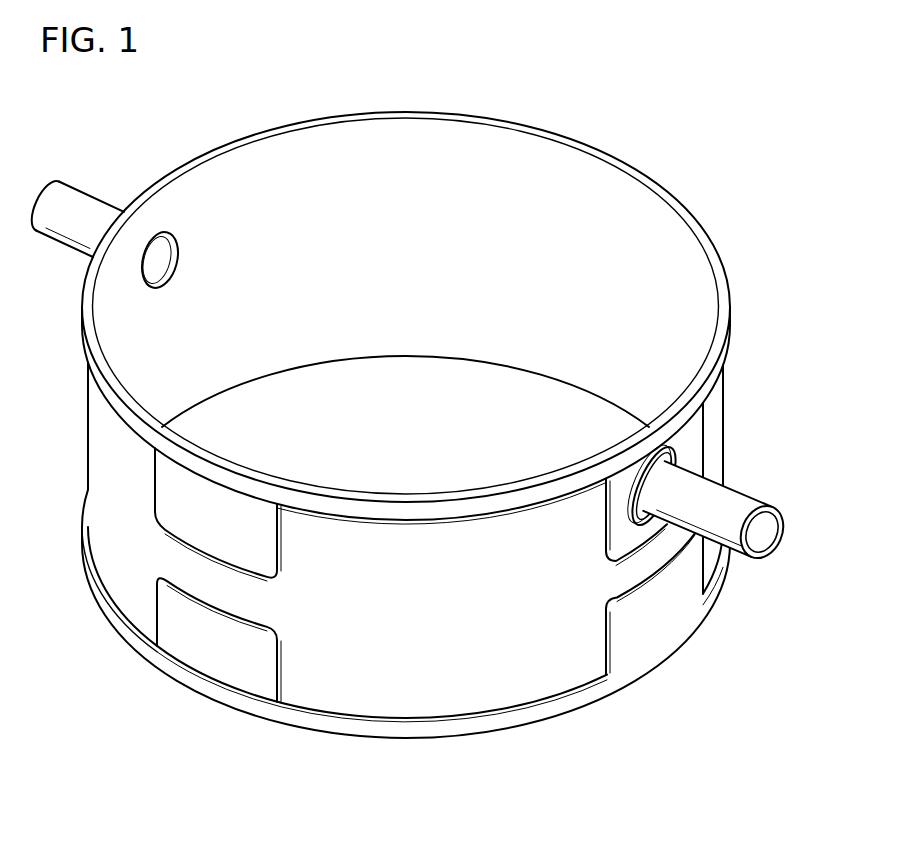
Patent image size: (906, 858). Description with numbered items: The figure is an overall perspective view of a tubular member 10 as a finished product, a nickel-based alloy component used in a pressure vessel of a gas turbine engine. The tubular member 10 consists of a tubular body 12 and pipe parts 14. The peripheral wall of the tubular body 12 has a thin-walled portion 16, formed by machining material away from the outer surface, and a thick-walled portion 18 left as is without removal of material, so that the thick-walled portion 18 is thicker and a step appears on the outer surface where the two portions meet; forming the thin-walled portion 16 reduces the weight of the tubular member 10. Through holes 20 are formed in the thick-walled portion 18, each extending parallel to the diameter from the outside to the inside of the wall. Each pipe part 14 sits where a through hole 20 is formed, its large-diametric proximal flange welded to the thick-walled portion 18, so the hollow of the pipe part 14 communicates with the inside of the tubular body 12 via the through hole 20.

The tubular member 10 is at (647, 82).
The tubular body 12 is at (648, 177).
The pipe part 14 is at (85, 200).
The thin-walled portion 16 is at (573, 660).
The thick-walled portion 18 is at (637, 647).
The through hole 20 is at (163, 258).